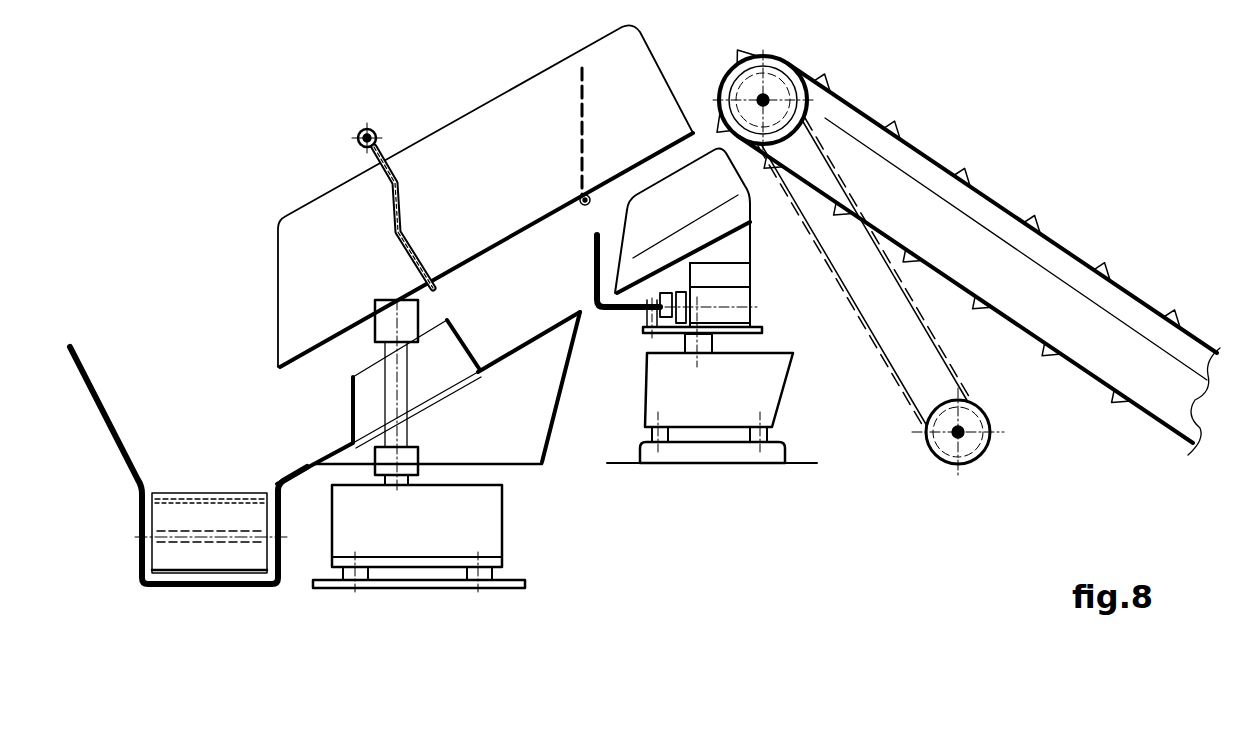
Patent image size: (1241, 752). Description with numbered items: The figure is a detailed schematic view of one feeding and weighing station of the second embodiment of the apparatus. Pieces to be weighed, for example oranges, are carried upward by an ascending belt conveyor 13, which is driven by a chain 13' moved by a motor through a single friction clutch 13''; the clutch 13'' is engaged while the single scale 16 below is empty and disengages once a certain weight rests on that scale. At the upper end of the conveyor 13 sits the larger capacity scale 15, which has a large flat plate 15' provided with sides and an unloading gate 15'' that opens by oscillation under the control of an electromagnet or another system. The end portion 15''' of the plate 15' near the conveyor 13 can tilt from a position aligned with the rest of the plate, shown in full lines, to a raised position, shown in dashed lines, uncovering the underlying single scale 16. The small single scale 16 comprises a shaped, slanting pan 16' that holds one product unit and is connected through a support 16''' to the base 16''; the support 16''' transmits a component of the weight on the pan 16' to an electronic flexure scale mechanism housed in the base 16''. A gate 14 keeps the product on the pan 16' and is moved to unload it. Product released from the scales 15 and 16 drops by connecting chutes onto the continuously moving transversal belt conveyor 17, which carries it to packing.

The ascending belt conveyor 13 is at (966, 252).
The chain 13' is at (864, 281).
The single friction clutch 13'' is at (987, 442).
The gate 14 is at (590, 278).
The larger capacity scale 15 is at (485, 196).
The large flat plate 15' is at (486, 250).
The unloading gate 15'' is at (370, 205).
The guide rod 15''' is at (657, 107).
The small single scale 16 is at (716, 238).
The slanting pan 16' is at (670, 219).
The base 16'' is at (748, 390).
The support 16''' is at (661, 375).
The transversal belt conveyor 17 is at (200, 520).